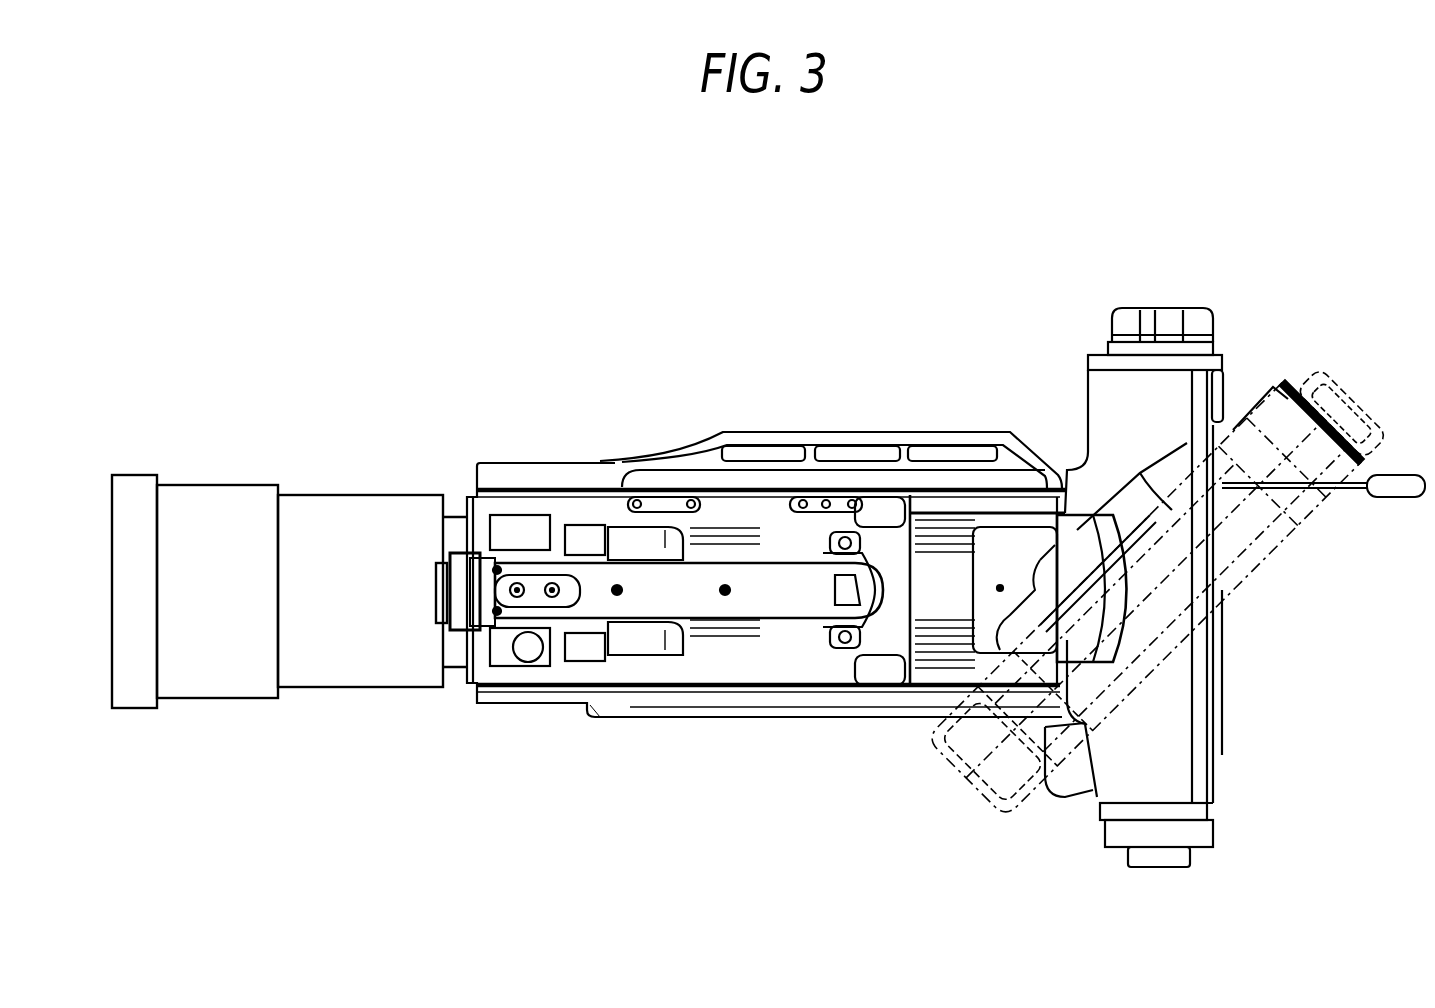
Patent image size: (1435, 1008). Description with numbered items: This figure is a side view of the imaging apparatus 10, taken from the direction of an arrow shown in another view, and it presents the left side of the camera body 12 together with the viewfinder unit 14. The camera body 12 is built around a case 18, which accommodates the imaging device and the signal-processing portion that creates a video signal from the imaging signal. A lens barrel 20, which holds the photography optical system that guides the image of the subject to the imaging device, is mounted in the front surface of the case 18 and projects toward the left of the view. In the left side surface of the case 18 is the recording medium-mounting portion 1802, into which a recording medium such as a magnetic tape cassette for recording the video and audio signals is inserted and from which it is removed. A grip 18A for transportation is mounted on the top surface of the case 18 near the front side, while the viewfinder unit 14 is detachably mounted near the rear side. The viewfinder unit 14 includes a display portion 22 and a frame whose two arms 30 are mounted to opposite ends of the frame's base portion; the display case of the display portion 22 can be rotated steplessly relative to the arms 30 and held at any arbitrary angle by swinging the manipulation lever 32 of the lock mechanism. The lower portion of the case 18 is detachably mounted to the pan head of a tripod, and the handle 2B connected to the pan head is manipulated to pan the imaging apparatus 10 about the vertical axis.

The imaging apparatus 10 is at (350, 276).
The camera body 12 is at (544, 461).
The viewfinder unit 14 is at (1231, 290).
The case 18 is at (633, 718).
The grip 18A is at (700, 600).
The recording medium-mounting portion 1802 is at (855, 432).
The lens barrel 20 is at (214, 480).
The display portion 22 is at (1185, 780).
The arms 30 is at (1108, 348).
The manipulation lever 32 is at (1112, 322).
The handle 2B is at (1398, 498).